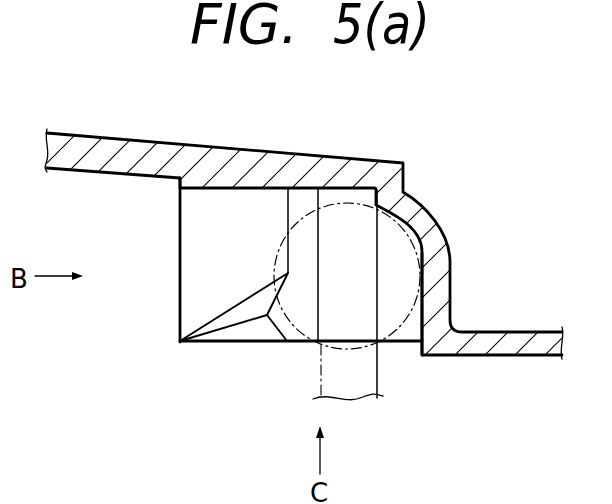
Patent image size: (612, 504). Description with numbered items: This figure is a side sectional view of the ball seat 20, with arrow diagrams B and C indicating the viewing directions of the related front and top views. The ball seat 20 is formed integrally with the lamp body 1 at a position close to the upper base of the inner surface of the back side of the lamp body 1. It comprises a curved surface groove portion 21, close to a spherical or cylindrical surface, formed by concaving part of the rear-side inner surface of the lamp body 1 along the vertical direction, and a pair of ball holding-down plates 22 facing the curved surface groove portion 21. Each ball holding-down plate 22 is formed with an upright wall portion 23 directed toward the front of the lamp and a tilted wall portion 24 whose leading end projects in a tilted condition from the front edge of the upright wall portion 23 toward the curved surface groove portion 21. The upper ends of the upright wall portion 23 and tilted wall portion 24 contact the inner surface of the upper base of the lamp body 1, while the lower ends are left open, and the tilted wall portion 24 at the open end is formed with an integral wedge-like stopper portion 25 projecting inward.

The lamp body 1 is at (296, 163).
The ball seat 20 is at (180, 285).
The curved surface groove portion 21 is at (413, 323).
The ball holding-down plate 22 is at (220, 350).
The upright wall portion 23 is at (352, 315).
The tilted wall portion 24 is at (215, 227).
The wedge-like stopper portion 25 is at (263, 335).